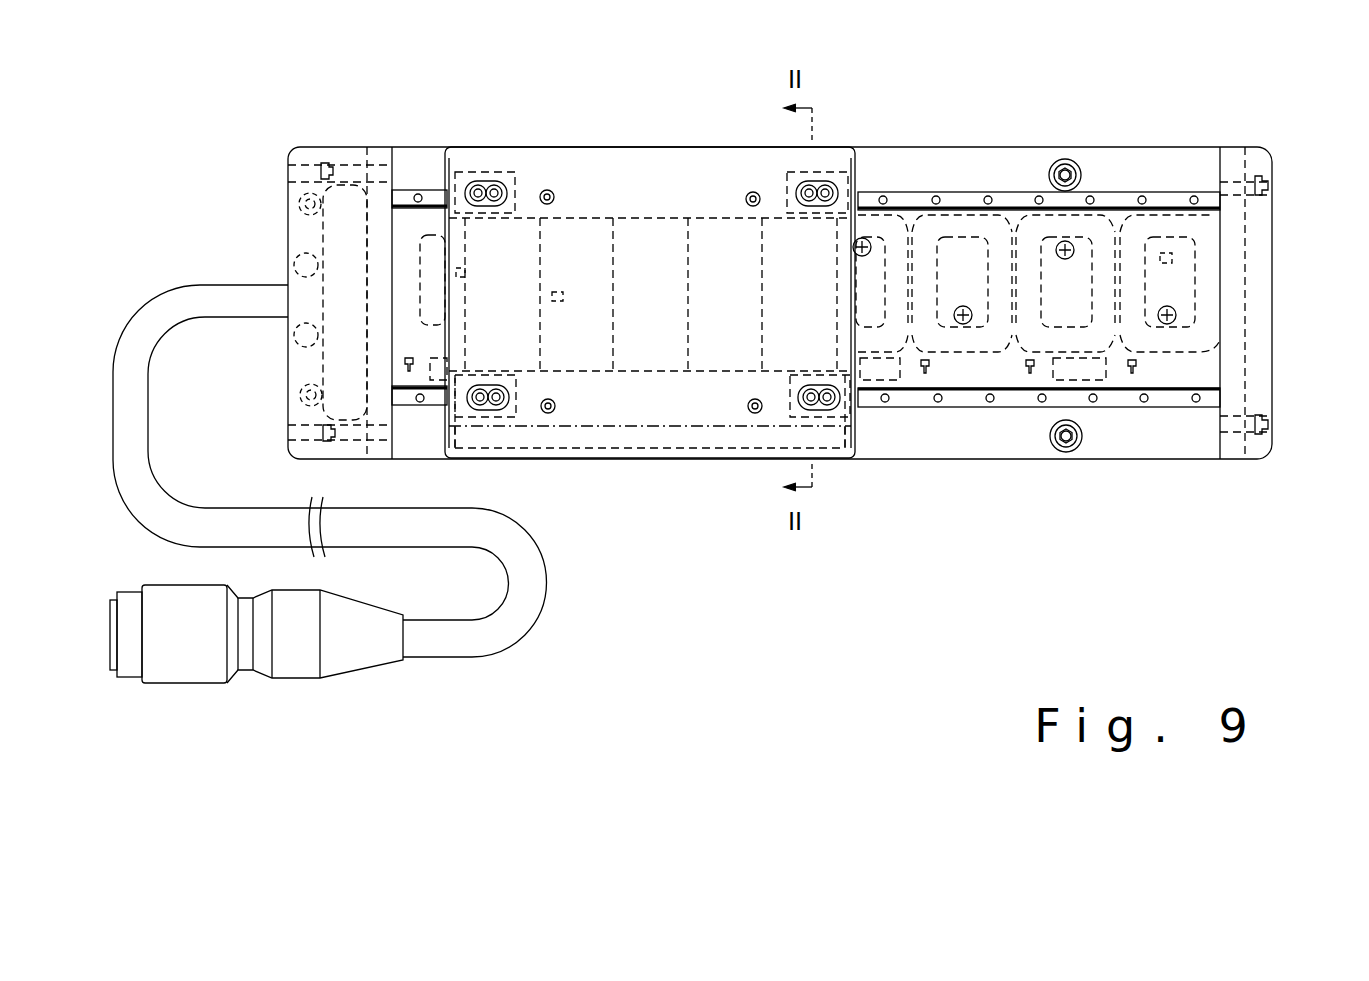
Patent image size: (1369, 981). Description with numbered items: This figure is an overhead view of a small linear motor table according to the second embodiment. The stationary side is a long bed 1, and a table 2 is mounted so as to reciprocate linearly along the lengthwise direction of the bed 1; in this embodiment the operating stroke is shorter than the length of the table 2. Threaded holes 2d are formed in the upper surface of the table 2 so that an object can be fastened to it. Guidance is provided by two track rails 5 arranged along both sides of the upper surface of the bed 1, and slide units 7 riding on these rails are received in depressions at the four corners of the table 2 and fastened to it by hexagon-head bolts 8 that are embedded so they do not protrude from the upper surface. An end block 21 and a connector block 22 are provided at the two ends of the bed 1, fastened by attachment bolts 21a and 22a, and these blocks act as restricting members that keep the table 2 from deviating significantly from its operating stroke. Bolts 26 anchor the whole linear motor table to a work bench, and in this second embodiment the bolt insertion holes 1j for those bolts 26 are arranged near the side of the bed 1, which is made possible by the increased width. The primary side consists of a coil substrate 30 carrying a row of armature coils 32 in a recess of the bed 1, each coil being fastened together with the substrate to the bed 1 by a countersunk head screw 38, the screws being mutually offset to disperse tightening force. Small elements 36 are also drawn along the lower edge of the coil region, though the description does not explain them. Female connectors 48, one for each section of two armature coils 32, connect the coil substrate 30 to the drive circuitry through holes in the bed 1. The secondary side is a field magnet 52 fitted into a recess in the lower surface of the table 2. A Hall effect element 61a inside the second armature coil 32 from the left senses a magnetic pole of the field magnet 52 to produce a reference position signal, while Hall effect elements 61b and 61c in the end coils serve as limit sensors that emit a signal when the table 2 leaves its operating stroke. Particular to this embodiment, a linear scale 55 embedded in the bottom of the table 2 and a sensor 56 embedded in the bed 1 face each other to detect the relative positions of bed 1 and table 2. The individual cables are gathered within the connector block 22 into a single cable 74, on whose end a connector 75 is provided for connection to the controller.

The bed 1 is at (869, 140).
The bolt insertion holes 1j is at (1068, 150).
The table 2 is at (598, 140).
The threaded holes 2d is at (547, 190).
The track rails 5 is at (1218, 150).
The slide units 7 is at (508, 172).
The bolts 8 is at (494, 180).
The end block 21 is at (1262, 282).
The attachment bolts 21a is at (1268, 185).
The connector block 22 is at (310, 240).
The attachment bolts 22a is at (325, 170).
The bolts 26 is at (1062, 160).
The coil substrate 30 is at (1205, 367).
The armature coils 32 is at (410, 148).
The retaining clip 36 is at (409, 372).
The countersunk head screws 38 is at (940, 237).
The female connectors 48 is at (443, 375).
The field magnet 52 is at (643, 212).
The linear scale 55 is at (705, 432).
The sensor 56 is at (800, 420).
The Hall effect element 61a is at (562, 302).
The Hall effect element 61b is at (462, 278).
The Hall effect element 61c is at (1172, 258).
The cable 74 is at (527, 637).
The connector 75 is at (197, 690).